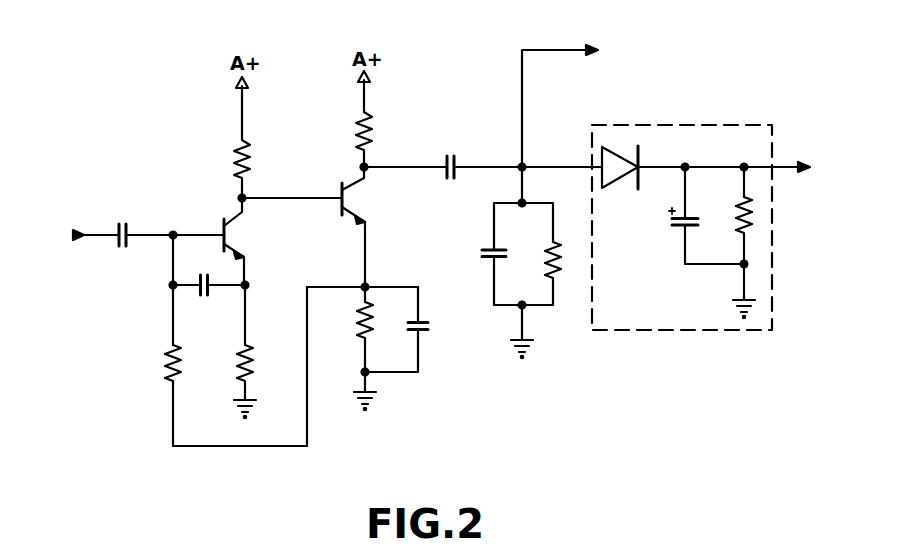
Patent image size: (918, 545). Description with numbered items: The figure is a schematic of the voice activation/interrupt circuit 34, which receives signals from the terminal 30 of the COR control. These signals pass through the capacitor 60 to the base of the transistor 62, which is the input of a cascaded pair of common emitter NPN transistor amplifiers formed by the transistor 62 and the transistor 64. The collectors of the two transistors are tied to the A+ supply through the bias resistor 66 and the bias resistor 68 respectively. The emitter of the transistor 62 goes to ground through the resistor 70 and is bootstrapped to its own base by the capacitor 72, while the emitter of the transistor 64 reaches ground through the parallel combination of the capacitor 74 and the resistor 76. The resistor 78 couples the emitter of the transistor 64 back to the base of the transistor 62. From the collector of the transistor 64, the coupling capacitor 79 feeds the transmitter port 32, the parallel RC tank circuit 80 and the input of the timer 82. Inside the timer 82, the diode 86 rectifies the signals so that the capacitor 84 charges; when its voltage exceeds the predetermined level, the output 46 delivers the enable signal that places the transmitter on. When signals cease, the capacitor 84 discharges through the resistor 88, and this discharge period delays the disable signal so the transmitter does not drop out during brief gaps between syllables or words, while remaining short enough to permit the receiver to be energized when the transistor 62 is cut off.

The terminal 30 is at (95, 248).
The transmitter port 32 is at (573, 101).
The voice activation/interrupt circuit 34 is at (460, 418).
The output 46 is at (729, 157).
The capacitor 60 is at (147, 202).
The transistor 62 is at (240, 232).
The transistor 64 is at (350, 202).
The bias resistor 66 is at (254, 169).
The bias resistor 68 is at (376, 133).
The resistor 70 is at (275, 368).
The capacitor 72 is at (211, 294).
The capacitor 74 is at (434, 327).
The resistor 76 is at (355, 324).
The resistor 78 is at (167, 360).
The coupling capacitor 79 is at (450, 154).
The parallel RC tank circuit 80 is at (484, 218).
The timer 82 is at (696, 127).
The capacitor 84 is at (666, 233).
The diode 86 is at (622, 188).
The resistor 88 is at (738, 226).